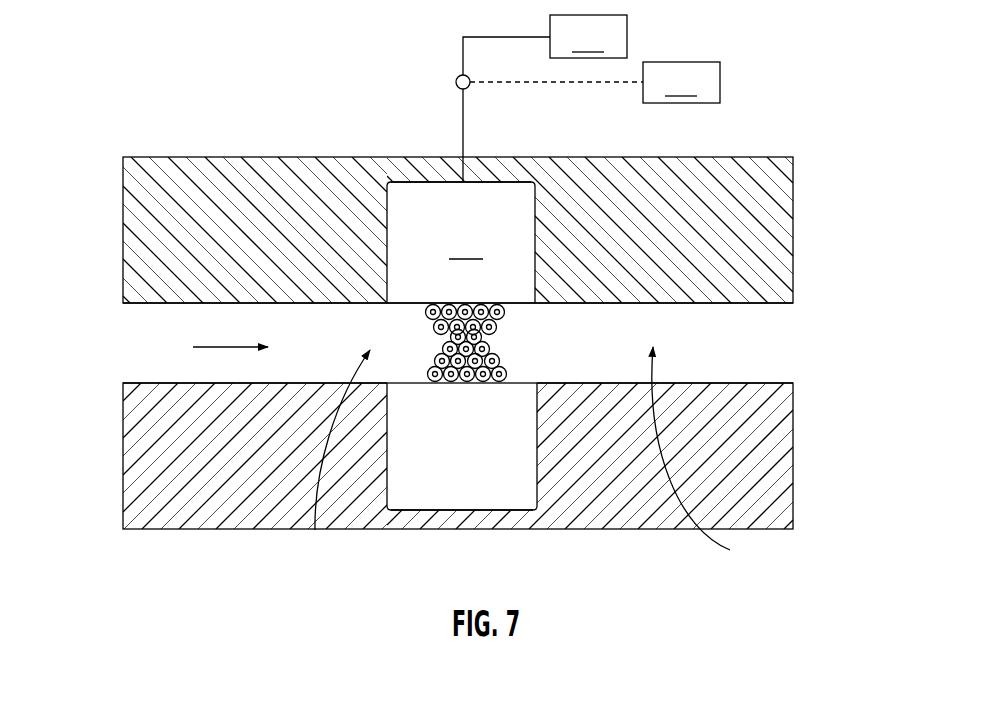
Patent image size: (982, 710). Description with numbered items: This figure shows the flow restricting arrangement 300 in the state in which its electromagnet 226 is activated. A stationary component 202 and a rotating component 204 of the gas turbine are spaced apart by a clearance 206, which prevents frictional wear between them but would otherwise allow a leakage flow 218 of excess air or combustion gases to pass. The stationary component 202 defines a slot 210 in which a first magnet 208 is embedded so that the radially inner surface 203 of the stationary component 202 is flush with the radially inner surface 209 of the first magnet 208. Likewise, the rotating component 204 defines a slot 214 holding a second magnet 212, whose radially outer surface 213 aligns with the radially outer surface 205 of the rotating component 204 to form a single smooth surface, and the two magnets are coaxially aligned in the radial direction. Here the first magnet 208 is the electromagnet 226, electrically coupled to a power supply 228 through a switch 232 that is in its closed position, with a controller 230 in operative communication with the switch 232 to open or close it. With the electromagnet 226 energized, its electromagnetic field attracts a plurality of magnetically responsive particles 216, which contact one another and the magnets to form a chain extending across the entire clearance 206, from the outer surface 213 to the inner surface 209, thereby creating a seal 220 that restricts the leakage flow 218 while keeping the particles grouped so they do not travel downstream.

The flow restricting arrangement 300 is at (93, 81).
The stationary component 202 is at (705, 182).
The radially inner surface 203 is at (740, 303).
The rotating component 204 is at (770, 447).
The radially outer surface 205 is at (748, 383).
The clearance 206 is at (707, 457).
The first magnet 208 is at (520, 222).
The radially inner surface 209 is at (537, 303).
The slot 210 is at (410, 180).
The second magnet 212 is at (497, 480).
The radially outer surface 213 is at (513, 383).
The slot 214 is at (466, 510).
The magnetically responsive particles 216 is at (512, 308).
The leakage flow 218 is at (218, 347).
The seal 220 is at (335, 454).
The electromagnet 226 is at (466, 175).
The power supply 228 is at (588, 36).
The controller 230 is at (595, 82).
The switch 232 is at (456, 84).